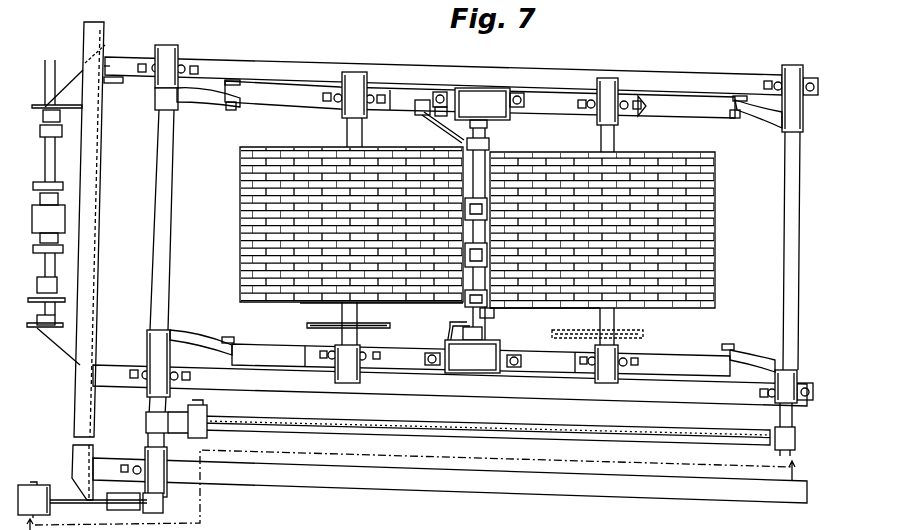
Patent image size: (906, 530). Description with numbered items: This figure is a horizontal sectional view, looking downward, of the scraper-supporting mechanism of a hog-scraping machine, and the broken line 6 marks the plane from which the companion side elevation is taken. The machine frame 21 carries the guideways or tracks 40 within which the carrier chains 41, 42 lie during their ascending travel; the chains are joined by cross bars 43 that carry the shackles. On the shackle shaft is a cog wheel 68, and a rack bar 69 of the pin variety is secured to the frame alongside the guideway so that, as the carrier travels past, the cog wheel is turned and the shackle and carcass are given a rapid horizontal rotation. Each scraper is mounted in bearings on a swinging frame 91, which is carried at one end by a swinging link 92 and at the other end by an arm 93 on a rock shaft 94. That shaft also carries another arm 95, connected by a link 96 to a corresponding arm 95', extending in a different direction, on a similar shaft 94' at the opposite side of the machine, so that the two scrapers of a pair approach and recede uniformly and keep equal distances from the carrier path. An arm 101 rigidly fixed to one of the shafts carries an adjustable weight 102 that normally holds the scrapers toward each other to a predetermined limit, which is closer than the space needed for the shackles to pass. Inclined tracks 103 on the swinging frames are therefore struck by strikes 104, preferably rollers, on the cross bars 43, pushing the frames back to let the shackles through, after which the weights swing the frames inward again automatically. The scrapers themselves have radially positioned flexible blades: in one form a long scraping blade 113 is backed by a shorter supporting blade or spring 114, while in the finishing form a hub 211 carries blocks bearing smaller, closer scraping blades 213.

The broken line 6 is at (412, 490).
The frame 21 is at (252, 68).
The guideways or tracks 40 is at (486, 337).
The carrier chain 41 is at (58, 117).
The carrier chain 42 is at (57, 318).
The cross bar 43 is at (486, 157).
The cog wheel 68 is at (494, 312).
The rack bar 69 is at (457, 322).
The swinging frame 91 is at (267, 95).
The swinging link 92 is at (440, 88).
The arm 93 is at (207, 102).
The rock shaft 94 is at (772, 246).
The rock shaft 94' is at (146, 279).
The arm 95 is at (753, 433).
The arm 95' is at (207, 417).
The link 96 is at (453, 428).
The arm 101 is at (56, 490).
The adjustable weight 102 is at (20, 490).
The inclined track 103 is at (460, 142).
The strike 104 is at (490, 142).
The scraping blade 113 is at (277, 0).
The supporting blade or spring 114 is at (347, 0).
The hub 211 is at (304, 148).
The scraping blade 213 is at (240, 252).